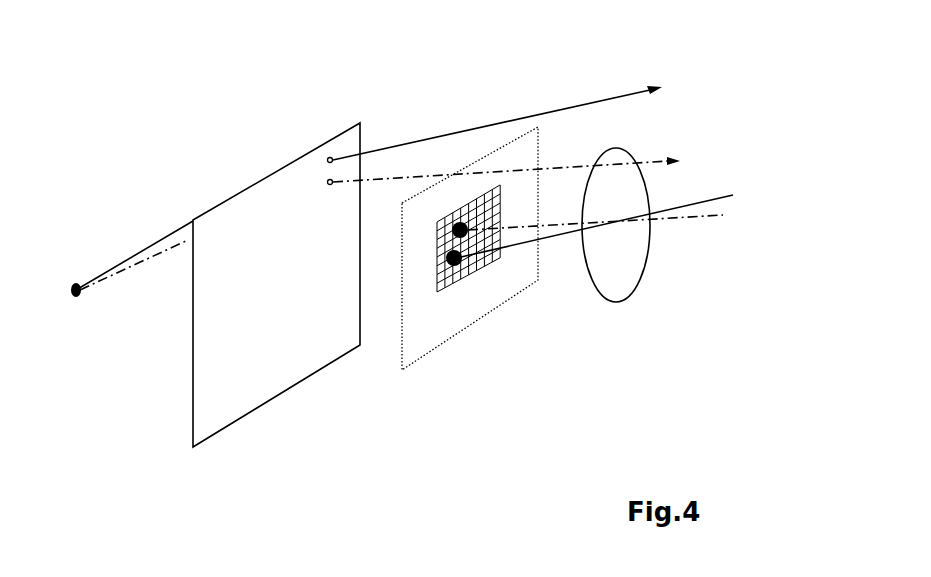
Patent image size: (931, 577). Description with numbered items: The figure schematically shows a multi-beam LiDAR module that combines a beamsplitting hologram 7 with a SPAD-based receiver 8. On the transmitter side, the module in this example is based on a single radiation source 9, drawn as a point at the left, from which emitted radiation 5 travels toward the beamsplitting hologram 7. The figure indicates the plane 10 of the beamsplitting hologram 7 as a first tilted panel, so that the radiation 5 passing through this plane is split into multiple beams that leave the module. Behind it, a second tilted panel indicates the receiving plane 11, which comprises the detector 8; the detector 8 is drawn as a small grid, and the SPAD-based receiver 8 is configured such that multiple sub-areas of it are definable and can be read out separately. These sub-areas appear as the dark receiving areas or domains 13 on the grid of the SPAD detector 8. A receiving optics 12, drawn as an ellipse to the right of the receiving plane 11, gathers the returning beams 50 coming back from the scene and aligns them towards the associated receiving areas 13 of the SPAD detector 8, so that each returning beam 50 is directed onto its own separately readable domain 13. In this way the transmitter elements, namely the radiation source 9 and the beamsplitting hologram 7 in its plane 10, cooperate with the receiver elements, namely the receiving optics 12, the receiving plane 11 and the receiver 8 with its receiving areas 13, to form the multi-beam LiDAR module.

The light beams 5 is at (653, 161).
The beamsplitting hologram 7 is at (221, 285).
The plane of the beamsplitting hologram 10 is at (223, 220).
The radiation source 9 is at (78, 296).
The receiving plane 11 is at (430, 343).
The SPAD-based receiver 8 is at (510, 288).
The receiving areas 13 is at (457, 262).
The returning beams 50 is at (723, 215).
The receiving optics 12 is at (625, 280).